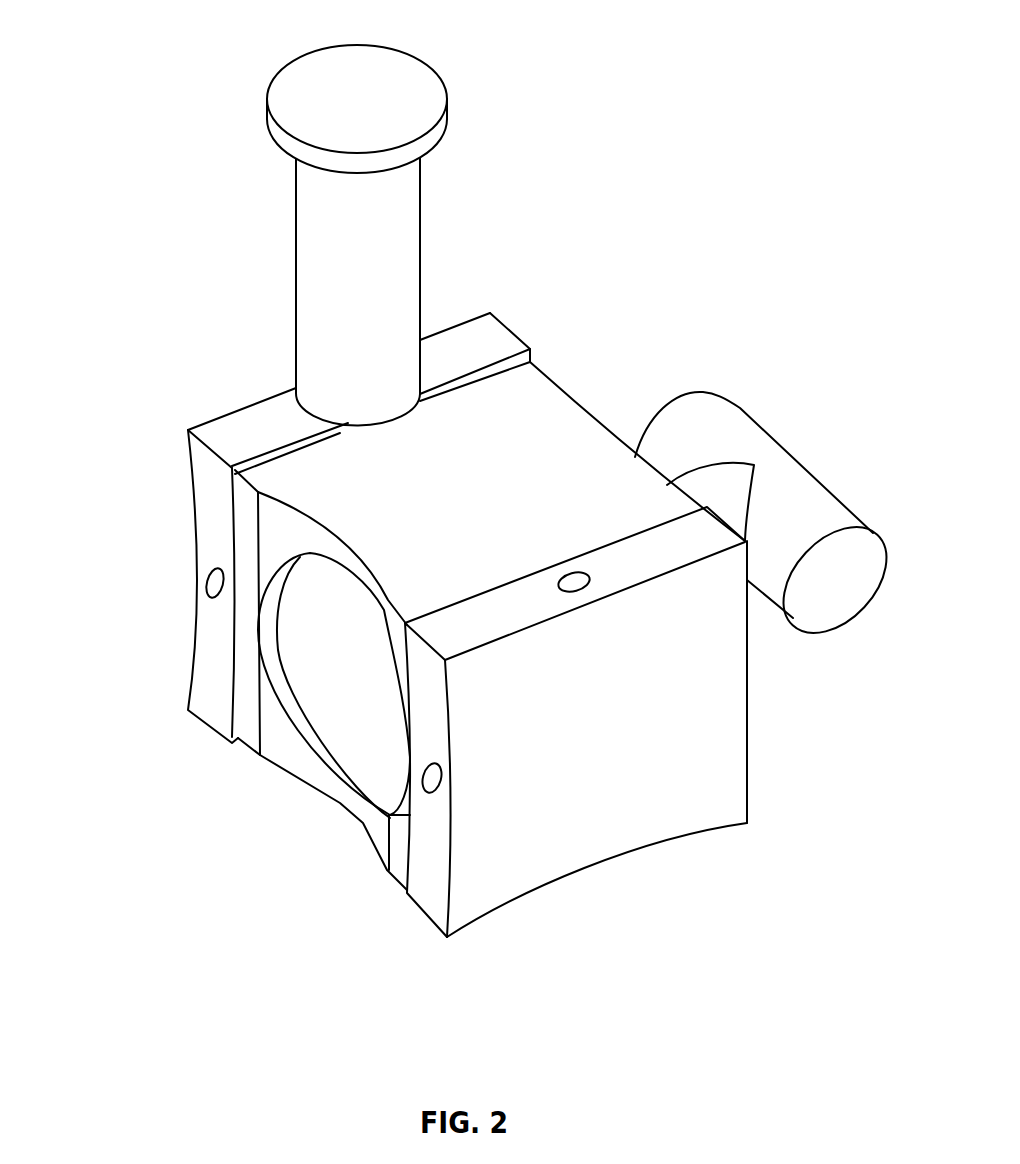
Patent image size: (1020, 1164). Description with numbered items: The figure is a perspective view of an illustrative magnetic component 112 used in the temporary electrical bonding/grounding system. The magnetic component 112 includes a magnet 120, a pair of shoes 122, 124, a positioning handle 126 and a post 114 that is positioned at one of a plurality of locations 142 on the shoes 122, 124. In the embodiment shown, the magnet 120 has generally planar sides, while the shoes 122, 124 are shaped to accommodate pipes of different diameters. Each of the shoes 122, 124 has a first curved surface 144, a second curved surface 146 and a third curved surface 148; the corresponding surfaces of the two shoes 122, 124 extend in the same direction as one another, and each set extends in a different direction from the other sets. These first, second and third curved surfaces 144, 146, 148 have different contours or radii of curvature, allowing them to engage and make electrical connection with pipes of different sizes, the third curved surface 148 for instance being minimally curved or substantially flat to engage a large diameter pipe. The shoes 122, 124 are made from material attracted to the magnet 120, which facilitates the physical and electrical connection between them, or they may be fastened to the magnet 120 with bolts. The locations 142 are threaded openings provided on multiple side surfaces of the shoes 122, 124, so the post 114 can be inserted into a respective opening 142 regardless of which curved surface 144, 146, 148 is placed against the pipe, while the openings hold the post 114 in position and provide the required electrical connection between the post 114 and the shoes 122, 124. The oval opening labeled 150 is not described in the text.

The magnetic component 112 is at (575, 455).
The post 114 is at (327, 90).
The magnet 120 is at (320, 492).
The shoe 122 is at (552, 802).
The shoe 124 is at (250, 417).
The positioning handle 126 is at (805, 473).
The locations (openings) 142 is at (387, 418).
The first curved surface 144 is at (687, 833).
The second curved surface 146 is at (213, 650).
The third curved surface 148 is at (468, 347).
The oval opening 150 is at (248, 712).